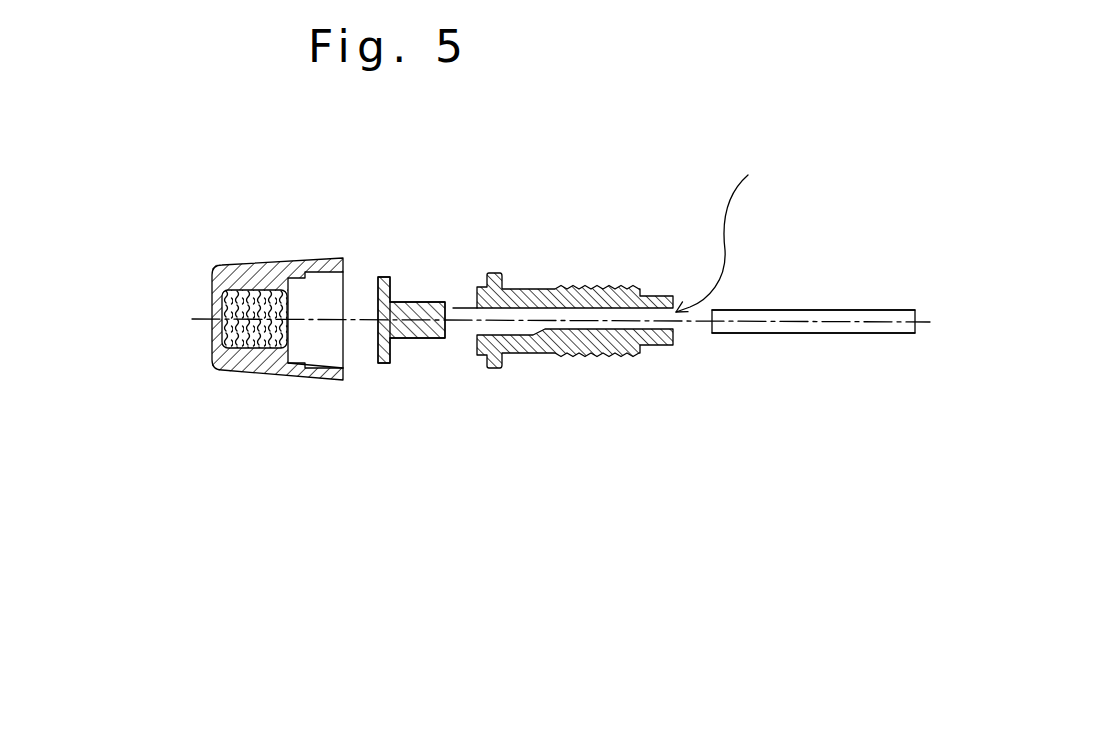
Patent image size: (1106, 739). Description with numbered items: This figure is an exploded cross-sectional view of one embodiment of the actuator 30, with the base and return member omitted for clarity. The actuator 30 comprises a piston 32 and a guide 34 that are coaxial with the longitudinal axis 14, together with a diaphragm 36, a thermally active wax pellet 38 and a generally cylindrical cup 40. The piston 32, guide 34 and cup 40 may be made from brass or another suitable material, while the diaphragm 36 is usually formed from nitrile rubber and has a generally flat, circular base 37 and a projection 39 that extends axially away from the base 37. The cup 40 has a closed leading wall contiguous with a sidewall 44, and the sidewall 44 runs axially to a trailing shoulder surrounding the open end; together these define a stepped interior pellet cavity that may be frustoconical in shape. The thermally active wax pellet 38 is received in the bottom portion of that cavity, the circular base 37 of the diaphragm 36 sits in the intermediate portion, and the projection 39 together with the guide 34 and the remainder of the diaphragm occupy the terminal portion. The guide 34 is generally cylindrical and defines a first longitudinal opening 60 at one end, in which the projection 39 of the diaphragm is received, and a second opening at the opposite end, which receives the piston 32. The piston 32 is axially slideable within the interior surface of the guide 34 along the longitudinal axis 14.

The longitudinal axis 14 is at (915, 322).
The actuator 30 is at (510, 570).
The piston 32 is at (781, 333).
The guide 34 is at (553, 355).
The diaphragm 36 is at (386, 366).
The base 37 is at (377, 312).
The projection 39 is at (432, 302).
The thermally active wax pellet 38 is at (250, 335).
The generally cylindrical cup 40 is at (242, 258).
The sidewall 44 is at (297, 382).
The first longitudinal opening 60 is at (465, 307).